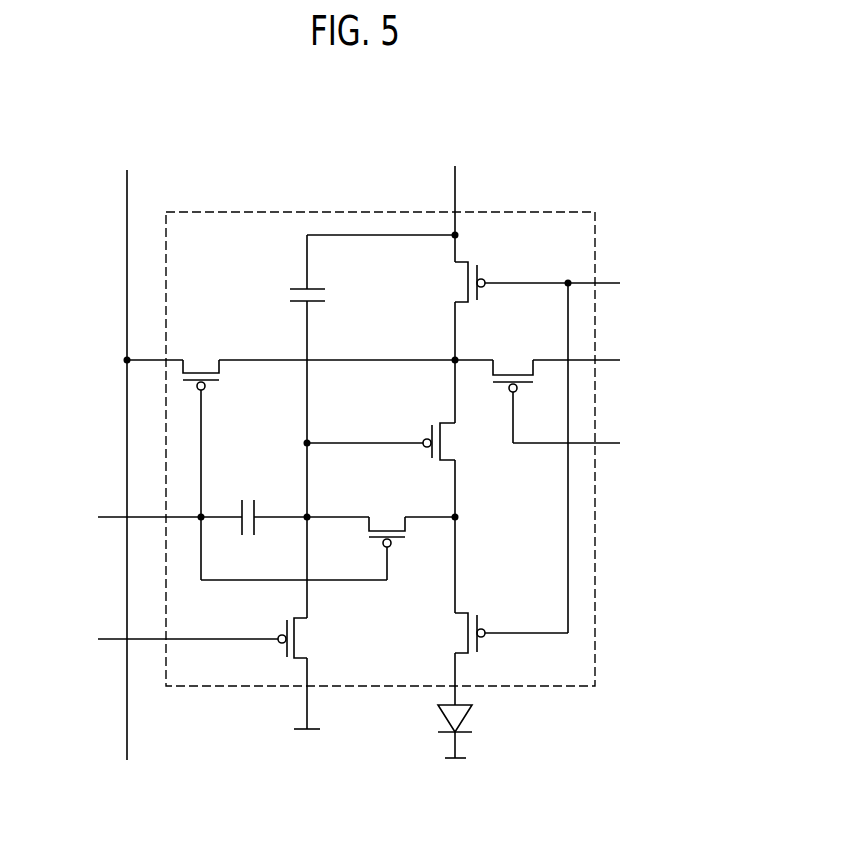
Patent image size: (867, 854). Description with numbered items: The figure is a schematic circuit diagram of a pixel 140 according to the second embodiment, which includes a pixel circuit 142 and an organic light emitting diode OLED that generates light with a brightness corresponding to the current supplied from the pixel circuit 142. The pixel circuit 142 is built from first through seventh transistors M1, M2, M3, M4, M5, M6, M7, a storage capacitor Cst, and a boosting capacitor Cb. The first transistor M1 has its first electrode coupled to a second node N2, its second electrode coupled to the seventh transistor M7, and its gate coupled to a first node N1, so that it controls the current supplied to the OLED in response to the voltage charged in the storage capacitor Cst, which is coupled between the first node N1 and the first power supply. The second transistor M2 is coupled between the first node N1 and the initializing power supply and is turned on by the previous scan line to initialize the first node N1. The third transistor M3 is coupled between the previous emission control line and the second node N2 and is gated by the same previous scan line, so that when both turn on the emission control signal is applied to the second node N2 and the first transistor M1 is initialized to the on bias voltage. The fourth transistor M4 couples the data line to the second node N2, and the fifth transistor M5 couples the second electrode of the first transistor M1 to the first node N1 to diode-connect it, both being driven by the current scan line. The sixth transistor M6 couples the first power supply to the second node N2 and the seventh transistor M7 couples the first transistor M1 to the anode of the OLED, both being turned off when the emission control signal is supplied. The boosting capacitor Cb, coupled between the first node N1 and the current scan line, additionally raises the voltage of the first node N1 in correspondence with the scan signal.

The pixel 140 is at (615, 126).
The pixel circuit 142 is at (276, 210).
The first transistor M1 is at (453, 441).
The second transistor M2 is at (309, 638).
The third transistor M3 is at (513, 362).
The fourth transistor M4 is at (201, 361).
The fifth transistor M5 is at (387, 519).
The sixth transistor M6 is at (456, 282).
The seventh transistor M7 is at (456, 633).
The storage capacitor Cst is at (290, 272).
The boosting capacitor Cb is at (247, 504).
The first node N1 is at (325, 432).
The second node N2 is at (440, 349).
The organic light emitting diode OLED is at (483, 722).